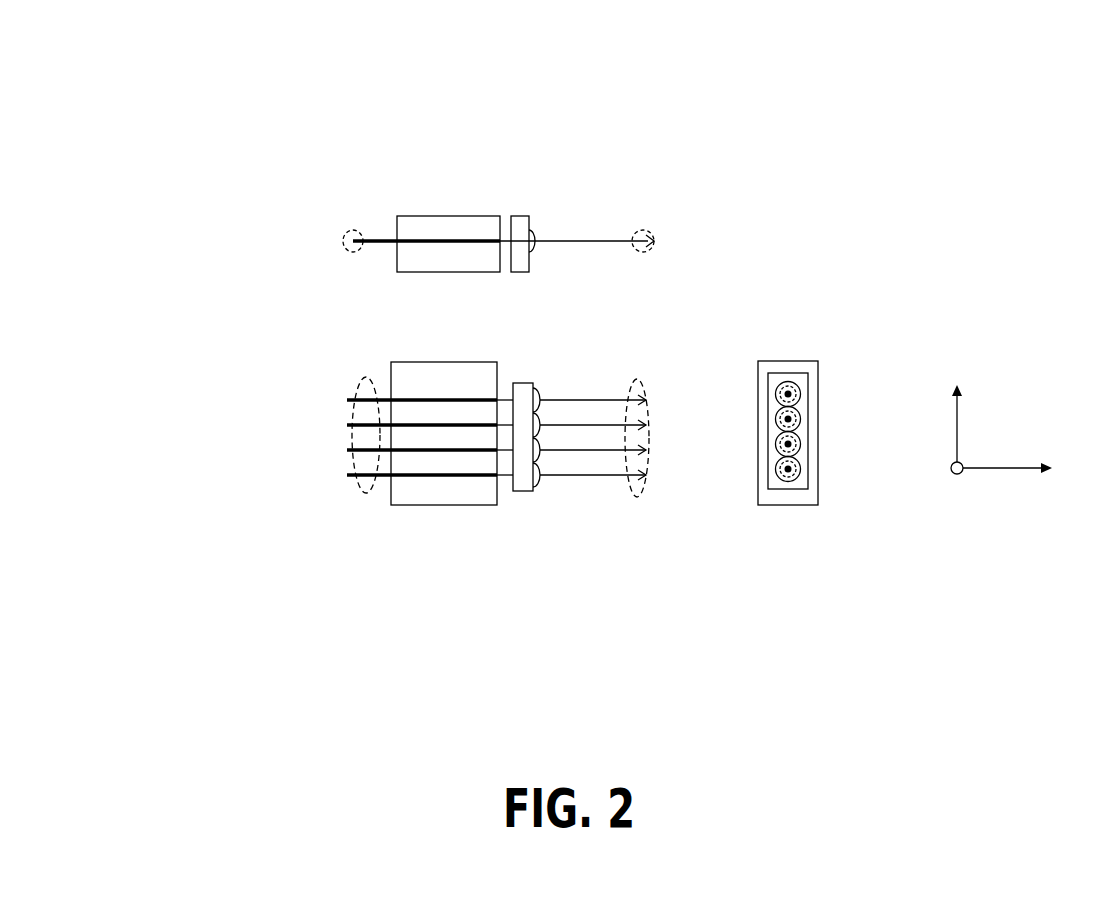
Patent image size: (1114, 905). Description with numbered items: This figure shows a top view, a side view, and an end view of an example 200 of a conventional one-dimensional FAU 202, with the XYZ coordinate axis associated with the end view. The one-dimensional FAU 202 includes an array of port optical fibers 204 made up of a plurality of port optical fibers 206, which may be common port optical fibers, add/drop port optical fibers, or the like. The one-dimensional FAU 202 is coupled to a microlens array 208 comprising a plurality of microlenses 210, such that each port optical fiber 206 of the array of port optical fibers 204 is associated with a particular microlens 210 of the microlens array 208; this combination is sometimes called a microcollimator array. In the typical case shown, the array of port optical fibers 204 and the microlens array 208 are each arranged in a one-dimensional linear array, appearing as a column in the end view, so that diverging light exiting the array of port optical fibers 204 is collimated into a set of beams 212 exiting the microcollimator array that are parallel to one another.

The example of a conventional one-dimensional FAU 200 is at (186, 40).
The one-dimensional FAU 202 is at (386, 498).
The array of port optical fibers 204 is at (347, 247).
The port optical fiber 206 is at (341, 476).
The microlens array 208 is at (528, 496).
The microlens 210 is at (539, 483).
The beams 212 is at (649, 256).